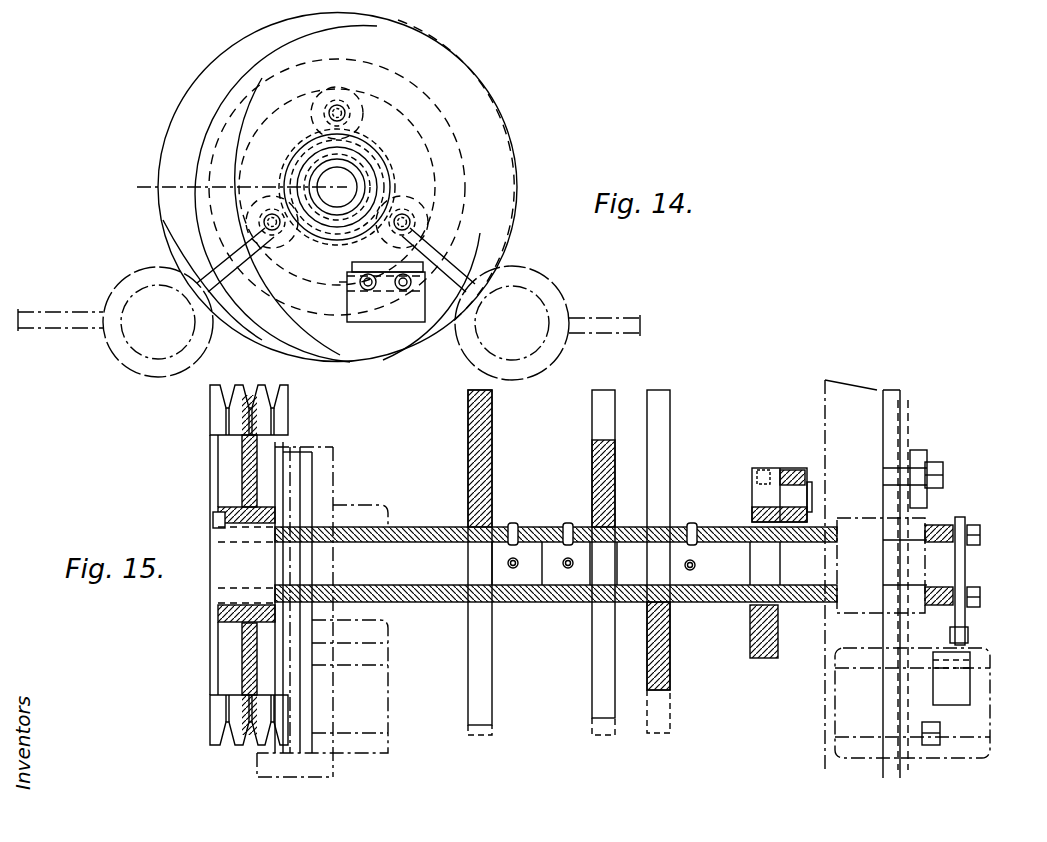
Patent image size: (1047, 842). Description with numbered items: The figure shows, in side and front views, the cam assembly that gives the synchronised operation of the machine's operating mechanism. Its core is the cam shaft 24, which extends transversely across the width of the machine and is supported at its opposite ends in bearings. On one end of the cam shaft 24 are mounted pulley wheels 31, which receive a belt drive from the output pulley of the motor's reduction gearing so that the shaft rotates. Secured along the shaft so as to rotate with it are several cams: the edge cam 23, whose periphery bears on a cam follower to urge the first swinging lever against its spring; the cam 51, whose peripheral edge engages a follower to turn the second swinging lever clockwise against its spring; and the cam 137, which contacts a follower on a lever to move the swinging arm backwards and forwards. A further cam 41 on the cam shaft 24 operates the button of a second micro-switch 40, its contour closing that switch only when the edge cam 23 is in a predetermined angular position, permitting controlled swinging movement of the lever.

In FIG. 14, the edge cam 23 is at (170, 237).
In FIG. 15, the edge cam 23 is at (670, 652).
In FIG. 15, the cam shaft 24 is at (272, 565).
In FIG. 14, the pulley wheels 31 is at (252, 333).
In FIG. 15, the pulley wheels 31 is at (214, 424).
In FIG. 15, the second micro-switch 40 is at (951, 678).
In FIG. 15, the cam 41 is at (966, 620).
In FIG. 14, the cam 51 is at (220, 160).
In FIG. 15, the cam 51 is at (600, 640).
In FIG. 14, the cam 137 is at (497, 153).
In FIG. 15, the cam 137 is at (482, 665).